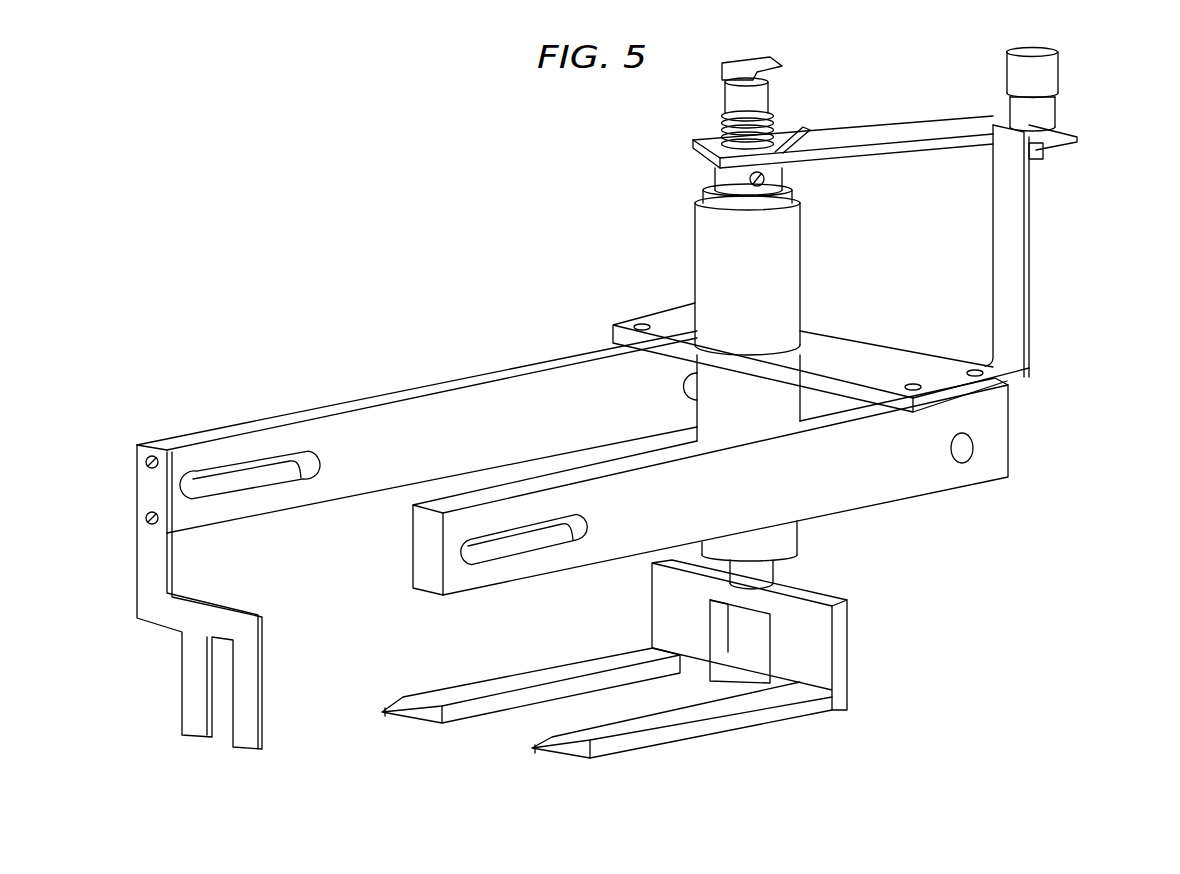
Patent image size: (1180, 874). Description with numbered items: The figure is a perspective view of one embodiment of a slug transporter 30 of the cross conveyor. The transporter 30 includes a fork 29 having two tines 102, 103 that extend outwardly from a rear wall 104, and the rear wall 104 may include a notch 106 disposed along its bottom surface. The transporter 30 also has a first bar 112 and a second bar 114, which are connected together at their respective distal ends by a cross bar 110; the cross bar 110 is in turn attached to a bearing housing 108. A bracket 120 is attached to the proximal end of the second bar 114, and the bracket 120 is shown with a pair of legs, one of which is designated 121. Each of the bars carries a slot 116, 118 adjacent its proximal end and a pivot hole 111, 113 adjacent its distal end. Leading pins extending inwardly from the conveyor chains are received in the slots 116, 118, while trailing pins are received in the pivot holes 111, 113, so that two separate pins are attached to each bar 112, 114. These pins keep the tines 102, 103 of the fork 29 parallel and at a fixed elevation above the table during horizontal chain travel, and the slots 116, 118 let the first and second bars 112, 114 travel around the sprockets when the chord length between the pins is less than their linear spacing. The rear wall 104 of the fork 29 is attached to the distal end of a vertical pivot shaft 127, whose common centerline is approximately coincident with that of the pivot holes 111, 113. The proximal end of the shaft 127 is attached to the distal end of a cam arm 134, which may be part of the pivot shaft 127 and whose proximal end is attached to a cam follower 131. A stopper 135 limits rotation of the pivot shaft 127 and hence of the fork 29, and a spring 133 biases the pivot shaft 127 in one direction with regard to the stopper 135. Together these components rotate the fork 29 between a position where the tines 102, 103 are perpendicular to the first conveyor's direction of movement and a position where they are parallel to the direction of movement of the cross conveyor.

The fork 29 is at (731, 770).
The transporter 30 is at (386, 322).
The tine 102 is at (455, 697).
The tine 103 is at (620, 742).
The rear wall 104 is at (843, 620).
The notch 106 is at (743, 640).
The bearing housing 108 is at (720, 272).
The cross bar 110 is at (887, 350).
The pivot hole 111 is at (975, 449).
The first bar 112 is at (905, 480).
The pivot hole 113 is at (680, 388).
The second bar 114 is at (352, 395).
The slot 116 is at (495, 551).
The slot 118 is at (230, 492).
The bracket 120 is at (250, 737).
The bracket leg 121 is at (220, 737).
The vertical pivot shaft 127 is at (735, 570).
The cam follower 131 is at (1062, 72).
The spring 133 is at (722, 130).
The cam arm 134 is at (880, 135).
The stopper 135 is at (1013, 200).